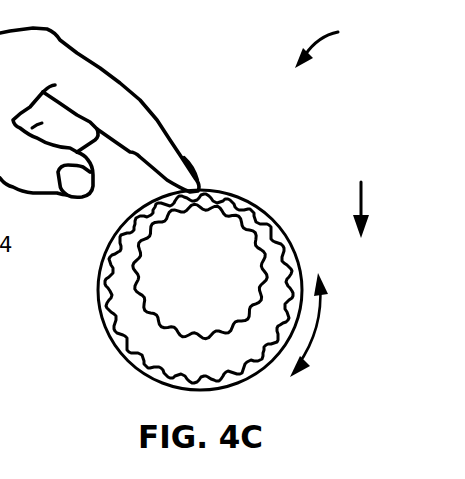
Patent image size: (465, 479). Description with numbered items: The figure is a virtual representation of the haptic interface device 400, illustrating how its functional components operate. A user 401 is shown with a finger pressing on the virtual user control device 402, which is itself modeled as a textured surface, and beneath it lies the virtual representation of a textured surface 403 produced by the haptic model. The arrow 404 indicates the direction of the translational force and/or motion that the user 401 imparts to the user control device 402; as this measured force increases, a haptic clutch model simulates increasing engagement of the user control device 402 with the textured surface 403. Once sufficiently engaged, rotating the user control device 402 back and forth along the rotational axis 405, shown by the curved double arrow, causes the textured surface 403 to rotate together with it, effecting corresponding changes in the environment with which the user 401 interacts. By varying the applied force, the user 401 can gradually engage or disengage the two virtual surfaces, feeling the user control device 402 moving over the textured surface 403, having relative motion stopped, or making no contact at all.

The haptic interface device 400 is at (343, 43).
The user 401 is at (78, 50).
The user control device 402 is at (230, 193).
The textured surface 403 is at (148, 333).
The arrow 404 is at (361, 200).
The rotational axis 405 is at (315, 320).